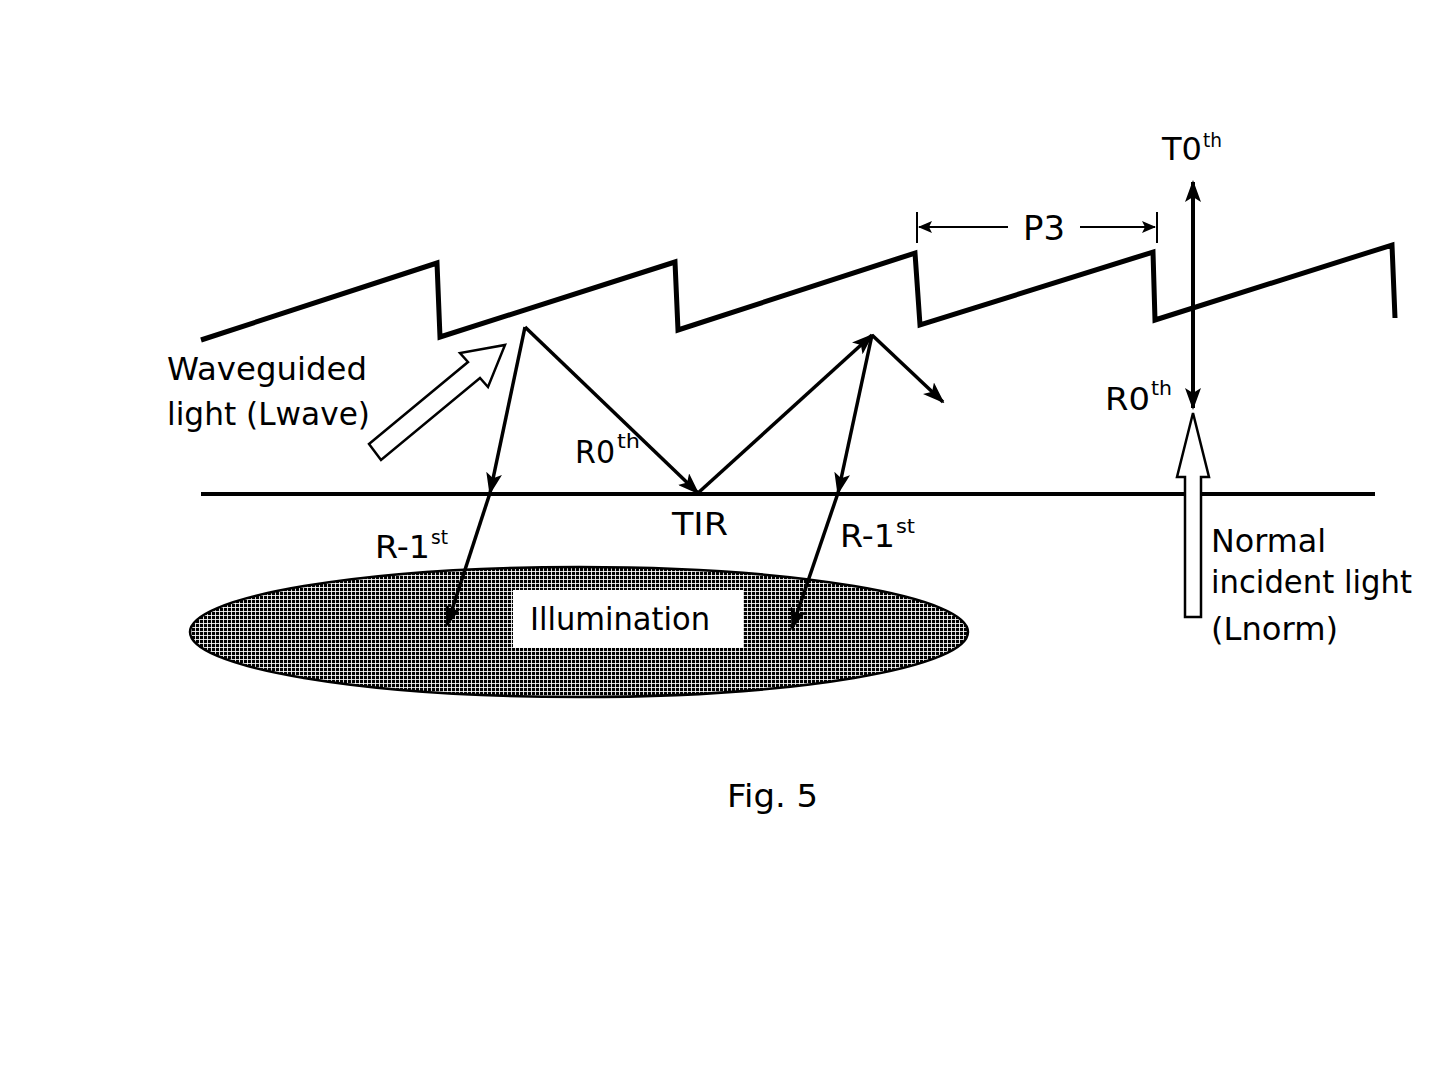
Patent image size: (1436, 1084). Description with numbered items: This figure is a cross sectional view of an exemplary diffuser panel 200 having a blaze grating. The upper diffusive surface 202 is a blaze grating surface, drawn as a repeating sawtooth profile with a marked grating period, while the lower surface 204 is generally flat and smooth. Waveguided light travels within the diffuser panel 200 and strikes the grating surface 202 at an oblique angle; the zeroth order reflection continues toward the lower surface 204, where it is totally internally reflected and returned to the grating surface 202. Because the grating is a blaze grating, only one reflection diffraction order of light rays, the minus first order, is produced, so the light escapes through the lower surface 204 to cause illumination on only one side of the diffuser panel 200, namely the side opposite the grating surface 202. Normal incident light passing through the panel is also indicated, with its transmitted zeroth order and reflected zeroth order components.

The diffuser panel 200 is at (794, 403).
The blaze grating surface 202 is at (295, 303).
The lower surface 204 is at (283, 502).